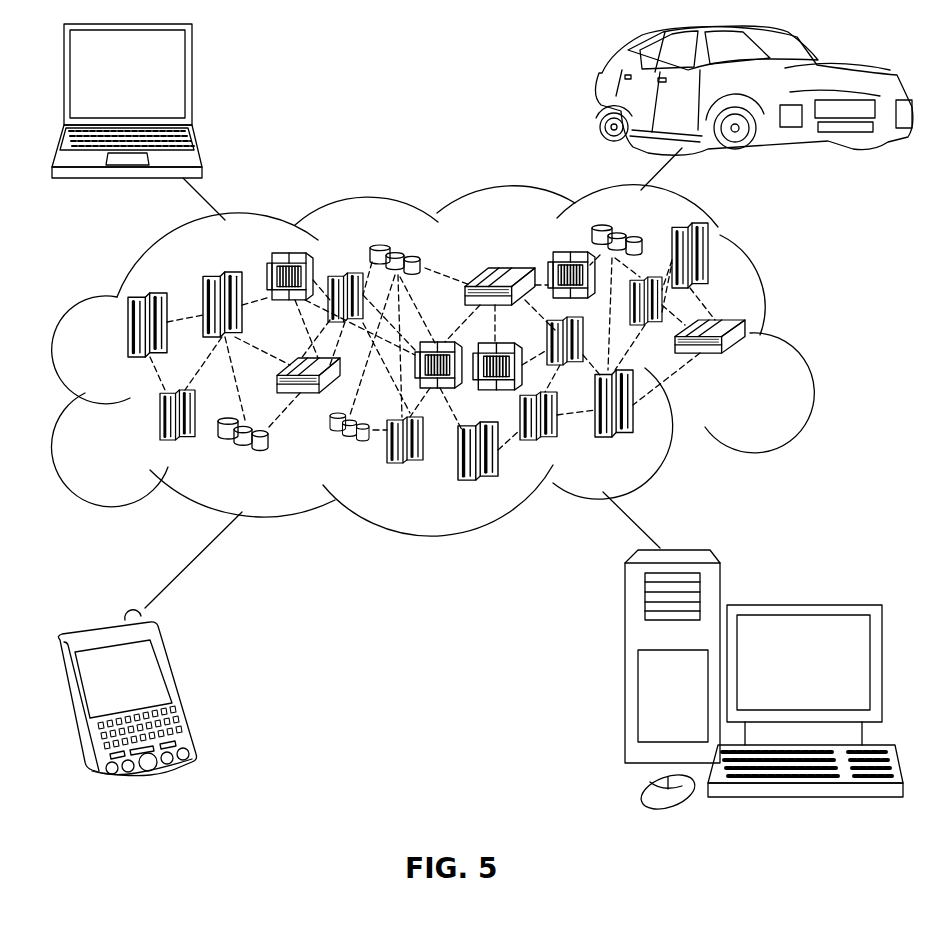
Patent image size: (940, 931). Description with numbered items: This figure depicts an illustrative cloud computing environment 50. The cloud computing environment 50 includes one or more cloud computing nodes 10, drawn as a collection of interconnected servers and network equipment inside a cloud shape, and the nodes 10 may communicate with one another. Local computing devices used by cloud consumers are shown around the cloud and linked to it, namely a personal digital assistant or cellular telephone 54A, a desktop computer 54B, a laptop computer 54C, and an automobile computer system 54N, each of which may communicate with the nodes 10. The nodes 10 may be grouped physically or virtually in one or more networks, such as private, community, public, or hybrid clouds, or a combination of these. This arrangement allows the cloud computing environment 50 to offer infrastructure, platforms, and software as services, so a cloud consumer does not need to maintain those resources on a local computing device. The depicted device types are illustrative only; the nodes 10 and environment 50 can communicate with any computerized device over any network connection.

The cloud computing node 10 is at (750, 363).
The cloud computing environment 50 is at (803, 332).
The personal digital assistant (PDA) or cellular telephone 54A is at (182, 690).
The desktop computer 54B is at (802, 605).
The laptop computer 54C is at (192, 80).
The automobile computer system 54N is at (597, 98).